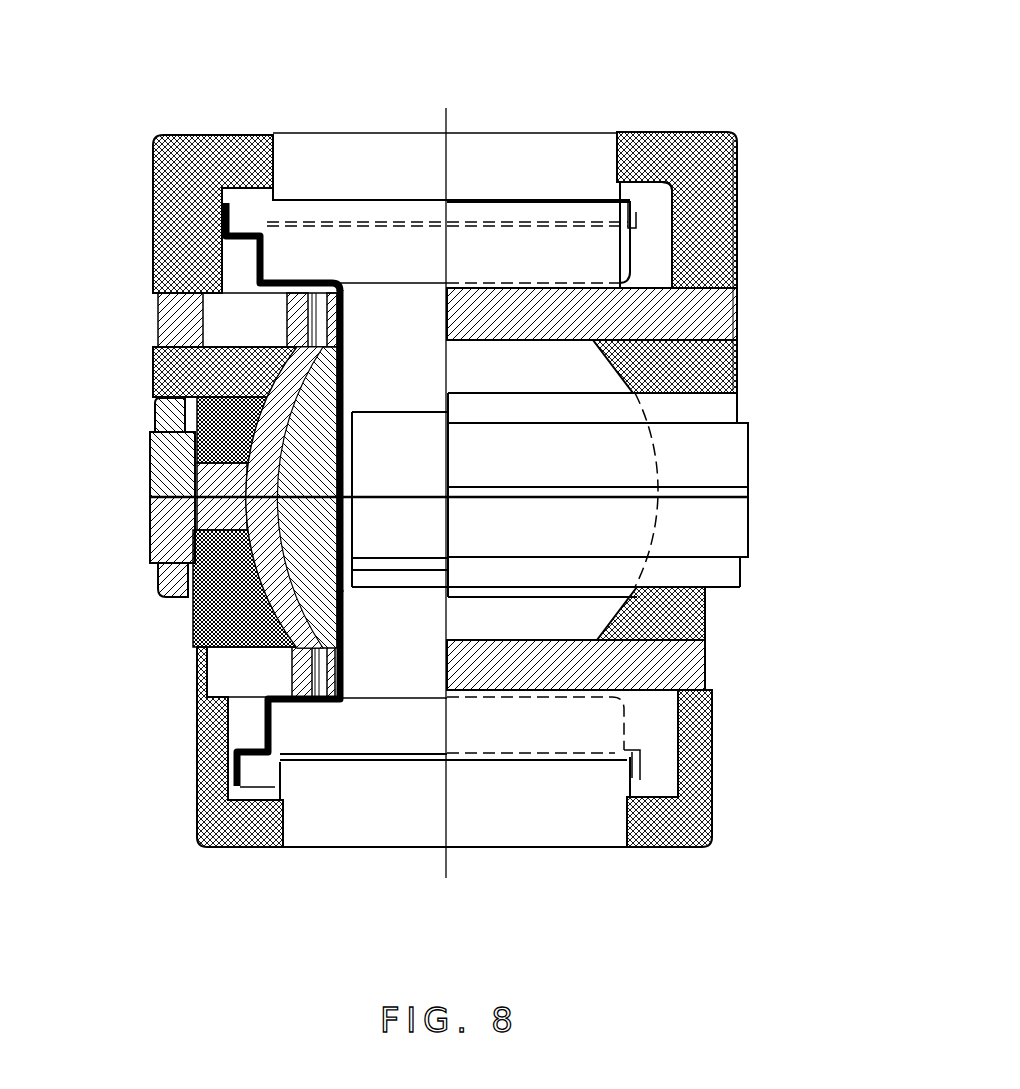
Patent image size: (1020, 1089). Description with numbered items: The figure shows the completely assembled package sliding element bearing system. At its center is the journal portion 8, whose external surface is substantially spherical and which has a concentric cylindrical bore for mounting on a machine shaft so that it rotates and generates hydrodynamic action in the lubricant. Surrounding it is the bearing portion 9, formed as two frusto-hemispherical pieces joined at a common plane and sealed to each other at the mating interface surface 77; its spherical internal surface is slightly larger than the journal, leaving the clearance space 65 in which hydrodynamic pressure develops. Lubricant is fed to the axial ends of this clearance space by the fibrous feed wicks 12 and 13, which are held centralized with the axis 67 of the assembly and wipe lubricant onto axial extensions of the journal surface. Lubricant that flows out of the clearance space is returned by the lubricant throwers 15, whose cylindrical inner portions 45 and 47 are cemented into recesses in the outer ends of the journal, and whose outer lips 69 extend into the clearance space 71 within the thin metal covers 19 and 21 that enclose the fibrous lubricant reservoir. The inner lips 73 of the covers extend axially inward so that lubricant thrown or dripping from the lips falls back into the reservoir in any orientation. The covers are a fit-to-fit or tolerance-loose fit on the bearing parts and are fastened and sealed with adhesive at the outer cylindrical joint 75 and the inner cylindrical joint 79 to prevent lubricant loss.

The journal portion 8 is at (325, 468).
The bearing portion 9 is at (150, 533).
The feed wick 12 is at (706, 622).
The feed wick 13 is at (740, 368).
The lubricant thrower 15 is at (617, 247).
The cover 19 is at (712, 748).
The cover 21 is at (737, 235).
The cylindrical inner portion 45 is at (350, 590).
The cylindrical inner portion 47 is at (342, 352).
The clearance space 65 is at (302, 558).
The axis 67 is at (447, 863).
The outer lip 69 is at (657, 228).
The clearance space 71 is at (736, 158).
The inner lip 73 is at (275, 197).
The outer cylindrical joint 75 is at (150, 413).
The mating interface surface 77 is at (693, 487).
The inner cylindrical joint 79 is at (182, 598).